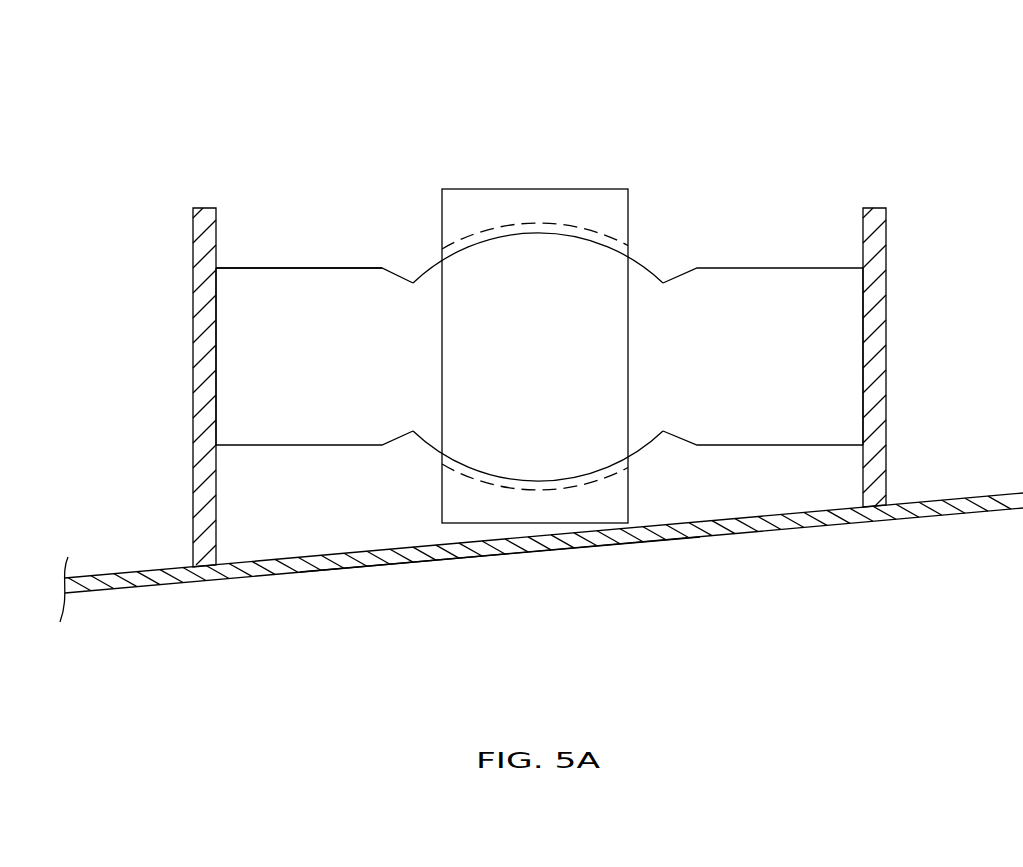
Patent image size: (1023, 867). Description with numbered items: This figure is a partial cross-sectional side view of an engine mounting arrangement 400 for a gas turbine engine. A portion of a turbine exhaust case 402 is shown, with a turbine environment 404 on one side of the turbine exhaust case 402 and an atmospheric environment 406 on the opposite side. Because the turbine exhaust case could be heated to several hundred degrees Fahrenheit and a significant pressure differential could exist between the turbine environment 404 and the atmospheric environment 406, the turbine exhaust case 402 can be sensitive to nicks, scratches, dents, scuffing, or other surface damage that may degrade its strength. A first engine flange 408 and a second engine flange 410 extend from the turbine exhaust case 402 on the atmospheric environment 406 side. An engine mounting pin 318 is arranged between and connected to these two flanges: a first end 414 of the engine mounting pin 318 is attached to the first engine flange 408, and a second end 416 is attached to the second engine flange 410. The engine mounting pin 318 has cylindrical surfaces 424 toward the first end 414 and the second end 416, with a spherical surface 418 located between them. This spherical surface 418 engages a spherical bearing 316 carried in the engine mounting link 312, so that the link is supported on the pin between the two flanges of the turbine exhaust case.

The engine mounting arrangement 400 is at (742, 82).
The turbine exhaust case 402 is at (283, 570).
The turbine environment 404 is at (571, 613).
The atmospheric environment 406 is at (159, 535).
The first engine flange 408 is at (878, 228).
The second engine flange 410 is at (212, 226).
The first end 414 is at (835, 355).
The second end 416 is at (247, 346).
The spherical surface 418 is at (541, 236).
The cylindrical surfaces 424 is at (361, 290).
The engine mounting link 312 is at (598, 189).
The spherical bearing 316 is at (598, 237).
The engine mounting pin 318 is at (321, 204).